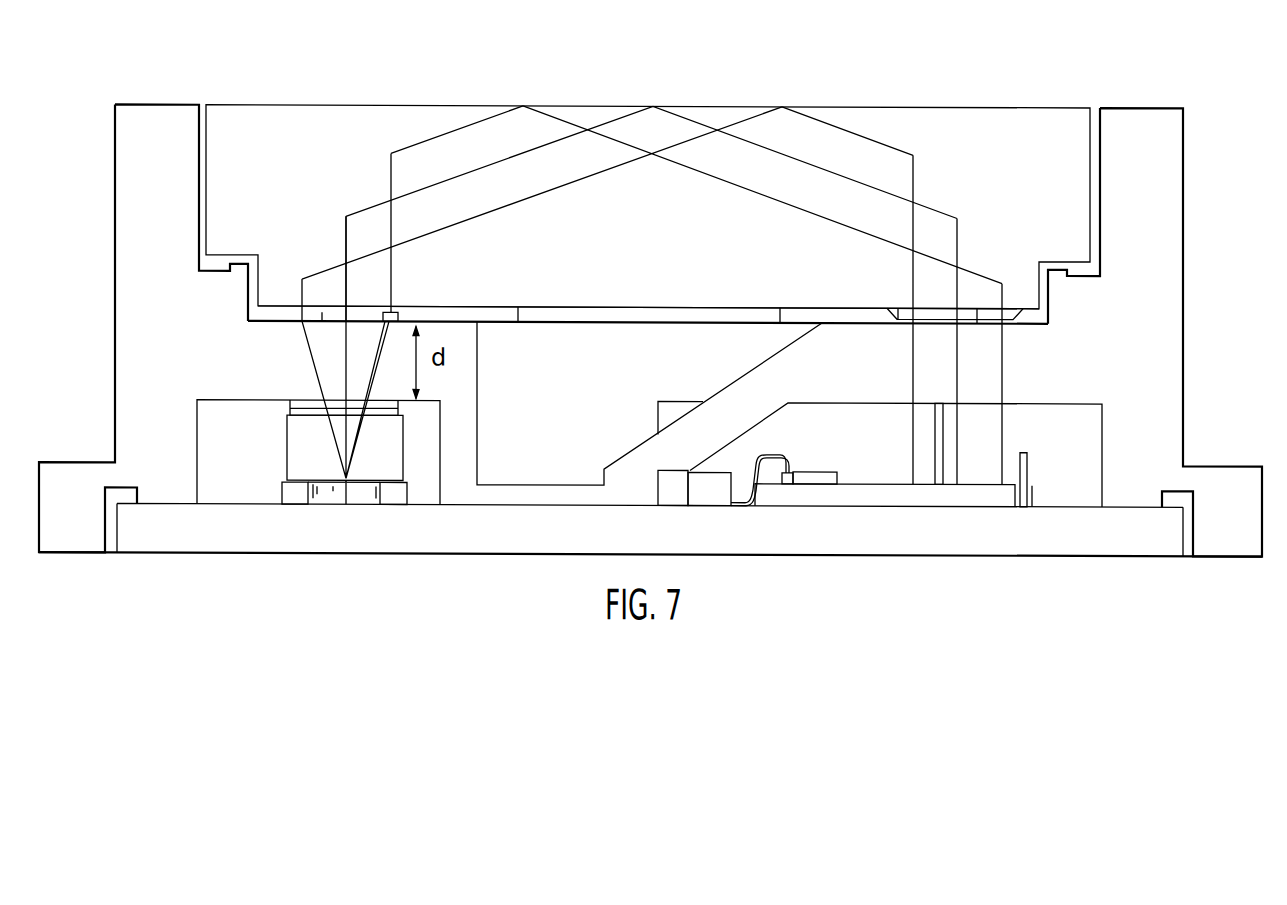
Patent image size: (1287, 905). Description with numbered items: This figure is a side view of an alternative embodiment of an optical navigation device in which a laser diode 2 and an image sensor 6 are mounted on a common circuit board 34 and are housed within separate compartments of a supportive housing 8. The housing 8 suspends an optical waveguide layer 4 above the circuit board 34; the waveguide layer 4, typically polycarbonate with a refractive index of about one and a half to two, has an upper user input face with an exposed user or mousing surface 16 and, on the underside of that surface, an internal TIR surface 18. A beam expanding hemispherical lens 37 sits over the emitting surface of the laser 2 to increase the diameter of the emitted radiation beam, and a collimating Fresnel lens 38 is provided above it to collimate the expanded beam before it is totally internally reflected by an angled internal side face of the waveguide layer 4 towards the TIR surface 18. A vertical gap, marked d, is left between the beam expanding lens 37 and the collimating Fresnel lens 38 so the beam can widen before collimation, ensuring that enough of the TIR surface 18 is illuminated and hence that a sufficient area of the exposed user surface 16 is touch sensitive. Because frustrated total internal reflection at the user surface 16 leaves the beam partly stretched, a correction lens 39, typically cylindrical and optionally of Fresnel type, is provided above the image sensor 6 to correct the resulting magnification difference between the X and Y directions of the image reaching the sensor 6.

The laser diode 2 is at (316, 503).
The optical waveguide layer 4 is at (286, 130).
The image sensor 6 is at (903, 490).
The housing 8 is at (135, 257).
The exposed user surface 16 is at (640, 104).
The TIR surface 18 is at (682, 104).
The common circuit board 34 is at (500, 546).
The beam expanding hemispherical lens 37 is at (292, 403).
The collimating Fresnel lens 38 is at (318, 308).
The correction lens 39 is at (938, 312).